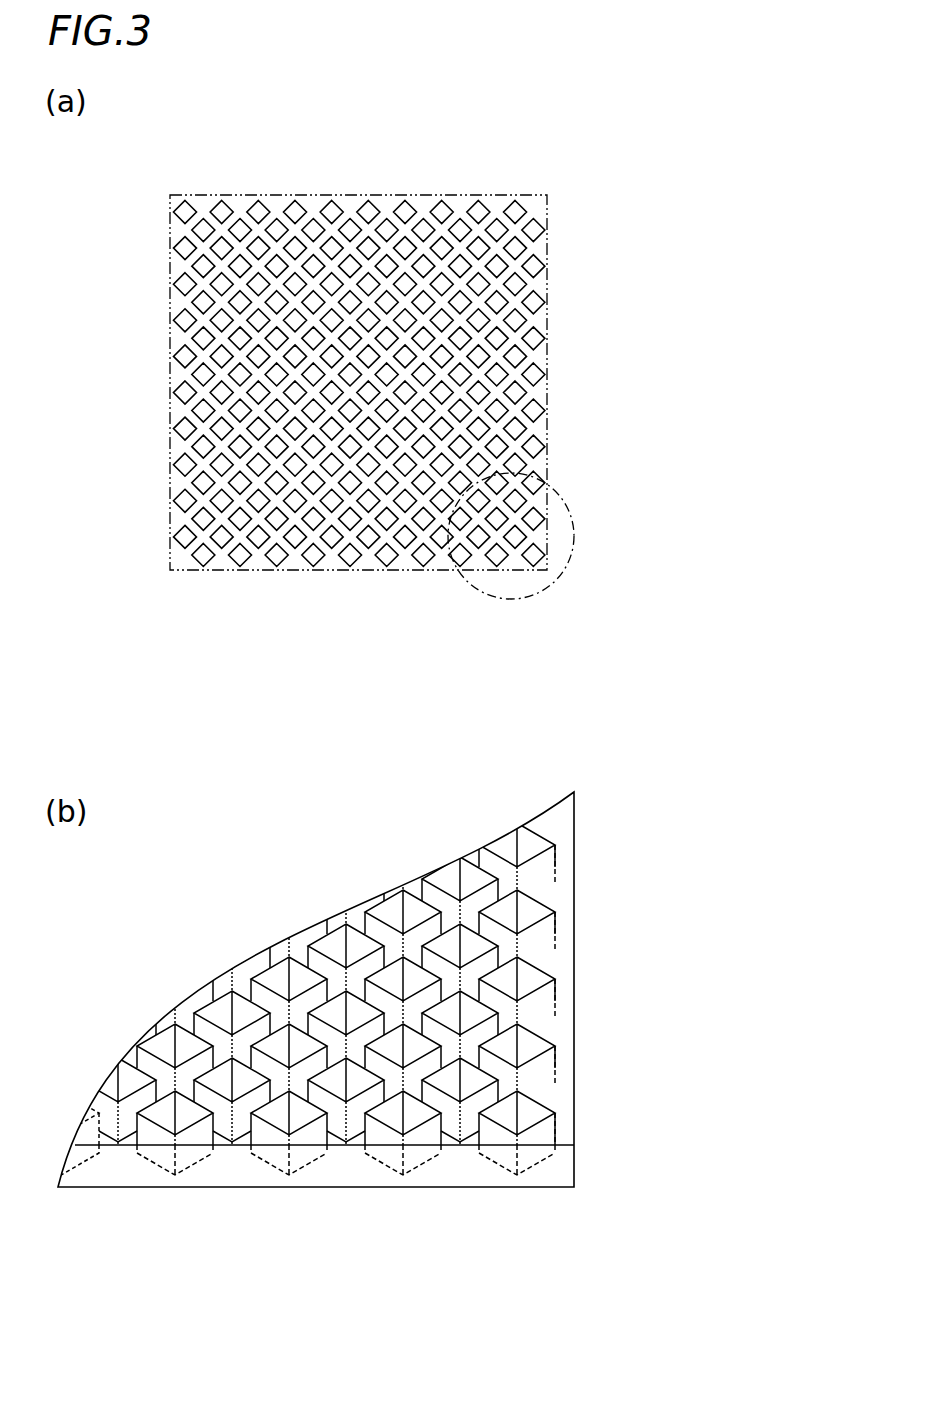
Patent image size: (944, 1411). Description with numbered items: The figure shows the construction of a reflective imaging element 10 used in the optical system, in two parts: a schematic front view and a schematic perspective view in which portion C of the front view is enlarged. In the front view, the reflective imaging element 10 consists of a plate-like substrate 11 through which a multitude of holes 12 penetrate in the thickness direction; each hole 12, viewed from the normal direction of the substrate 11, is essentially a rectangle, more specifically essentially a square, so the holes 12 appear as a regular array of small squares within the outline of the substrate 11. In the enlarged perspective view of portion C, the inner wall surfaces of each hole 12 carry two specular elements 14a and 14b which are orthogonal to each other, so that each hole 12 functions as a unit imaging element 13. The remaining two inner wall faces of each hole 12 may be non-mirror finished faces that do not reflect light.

The optical structure body 10 is at (155, 248).
The substrate 11 is at (556, 190).
The protrusion 12 is at (313, 223).
The gap between protrusions 13 is at (556, 337).
The inclined top face of protrusion 14a is at (355, 948).
The side face of protrusion 14b is at (356, 944).
The enlarged region C is at (576, 516).